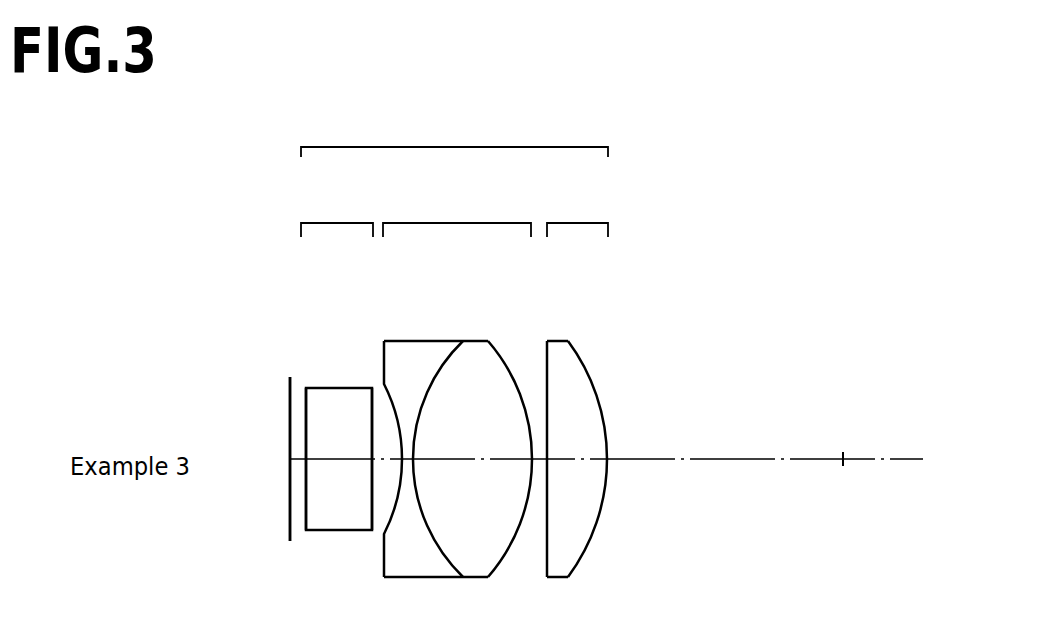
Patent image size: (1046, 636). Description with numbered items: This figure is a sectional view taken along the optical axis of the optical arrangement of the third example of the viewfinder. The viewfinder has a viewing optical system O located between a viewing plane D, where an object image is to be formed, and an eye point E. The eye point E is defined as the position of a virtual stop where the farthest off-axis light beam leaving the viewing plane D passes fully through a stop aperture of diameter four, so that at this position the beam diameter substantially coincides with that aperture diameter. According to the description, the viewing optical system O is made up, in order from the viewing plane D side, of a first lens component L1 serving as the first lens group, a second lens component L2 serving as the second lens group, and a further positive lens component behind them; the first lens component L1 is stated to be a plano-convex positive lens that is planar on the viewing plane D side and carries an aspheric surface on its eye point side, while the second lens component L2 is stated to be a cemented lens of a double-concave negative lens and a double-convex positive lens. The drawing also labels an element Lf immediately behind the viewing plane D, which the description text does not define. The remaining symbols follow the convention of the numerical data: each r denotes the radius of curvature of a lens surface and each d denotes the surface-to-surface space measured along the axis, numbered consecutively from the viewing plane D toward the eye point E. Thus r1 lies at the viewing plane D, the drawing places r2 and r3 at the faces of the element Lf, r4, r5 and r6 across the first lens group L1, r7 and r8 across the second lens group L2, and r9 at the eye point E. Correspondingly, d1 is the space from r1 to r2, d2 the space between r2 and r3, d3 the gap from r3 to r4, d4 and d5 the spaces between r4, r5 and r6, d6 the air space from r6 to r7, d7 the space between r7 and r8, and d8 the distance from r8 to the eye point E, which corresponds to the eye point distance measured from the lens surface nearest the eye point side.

The viewing optical system O is at (454, 132).
The filter Lf is at (337, 358).
The first lens component L1 is at (457, 381).
The second lens component L2 is at (577, 381).
The viewing plane D is at (290, 512).
The eye point E is at (843, 510).
The radius of curvature of first surface r1 is at (288, 403).
The radius of curvature of second surface r2 is at (306, 400).
The radius of curvature of third surface r3 is at (372, 410).
The radius of curvature of fourth surface r4 is at (390, 403).
The radius of curvature of fifth surface r5 is at (431, 385).
The radius of curvature of sixth surface r6 is at (509, 372).
The radius of curvature of seventh surface r7 is at (547, 370).
The radius of curvature of eighth surface r8 is at (586, 370).
The radius of curvature of ninth surface r9 is at (843, 412).
The first surface-to-surface space d1 is at (298, 461).
The second surface-to-surface space d2 is at (335, 477).
The third surface-to-surface space d3 is at (378, 461).
The fourth surface-to-surface space d4 is at (410, 461).
The fifth surface-to-surface space d5 is at (472, 477).
The sixth surface-to-surface space d6 is at (537, 461).
The seventh surface-to-surface space d7 is at (570, 477).
The eighth surface-to-surface space d8 is at (720, 480).